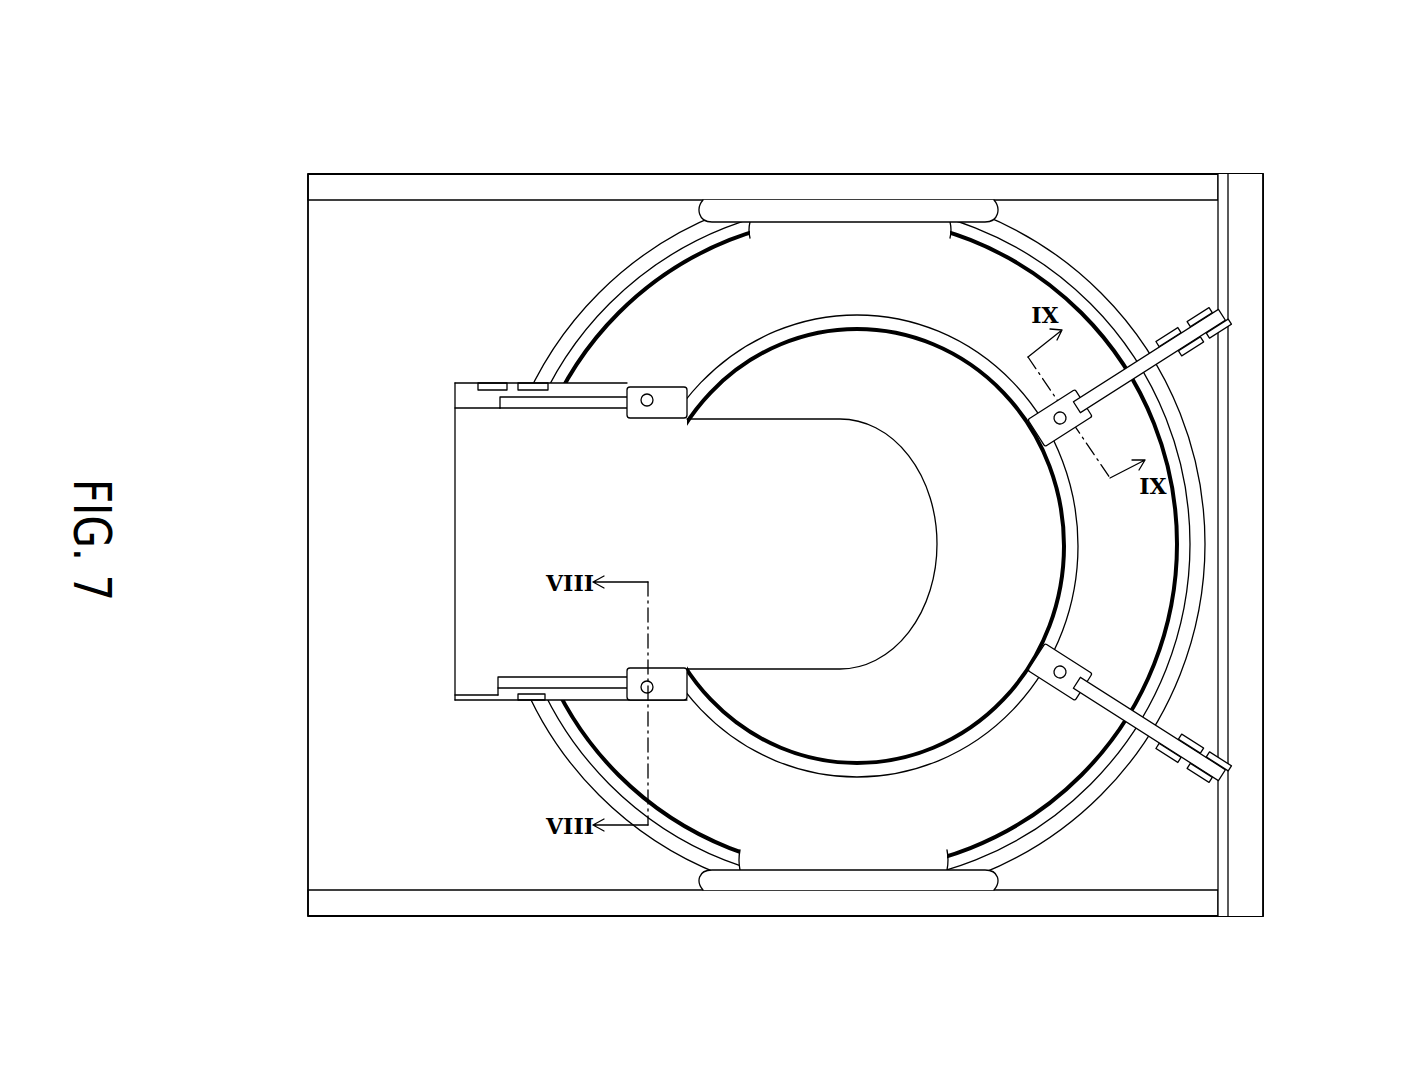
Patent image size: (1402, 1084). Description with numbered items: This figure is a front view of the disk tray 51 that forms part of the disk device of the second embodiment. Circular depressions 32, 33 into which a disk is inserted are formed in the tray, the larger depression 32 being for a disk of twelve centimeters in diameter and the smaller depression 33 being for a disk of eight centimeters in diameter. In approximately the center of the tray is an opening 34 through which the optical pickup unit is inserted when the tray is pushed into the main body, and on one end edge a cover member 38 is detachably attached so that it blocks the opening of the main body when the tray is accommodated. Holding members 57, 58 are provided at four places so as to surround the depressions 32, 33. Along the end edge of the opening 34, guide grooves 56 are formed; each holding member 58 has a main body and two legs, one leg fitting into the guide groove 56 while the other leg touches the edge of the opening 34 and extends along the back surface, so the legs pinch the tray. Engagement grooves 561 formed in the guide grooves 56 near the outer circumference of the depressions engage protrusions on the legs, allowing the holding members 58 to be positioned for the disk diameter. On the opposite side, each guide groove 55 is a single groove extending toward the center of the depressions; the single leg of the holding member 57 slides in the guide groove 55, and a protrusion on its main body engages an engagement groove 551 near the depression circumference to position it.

The disk tray 51 is at (421, 225).
The depression 32 is at (669, 290).
The depression 33 is at (797, 340).
The opening 34 is at (487, 545).
The cover member 38 is at (1254, 452).
The guide groove 55 is at (1222, 326).
The engagement groove 551 is at (1165, 352).
The guide groove 56 is at (600, 404).
The engagement groove 561 is at (500, 383).
The holding member 57 is at (1040, 422).
The holding member 58 is at (655, 420).